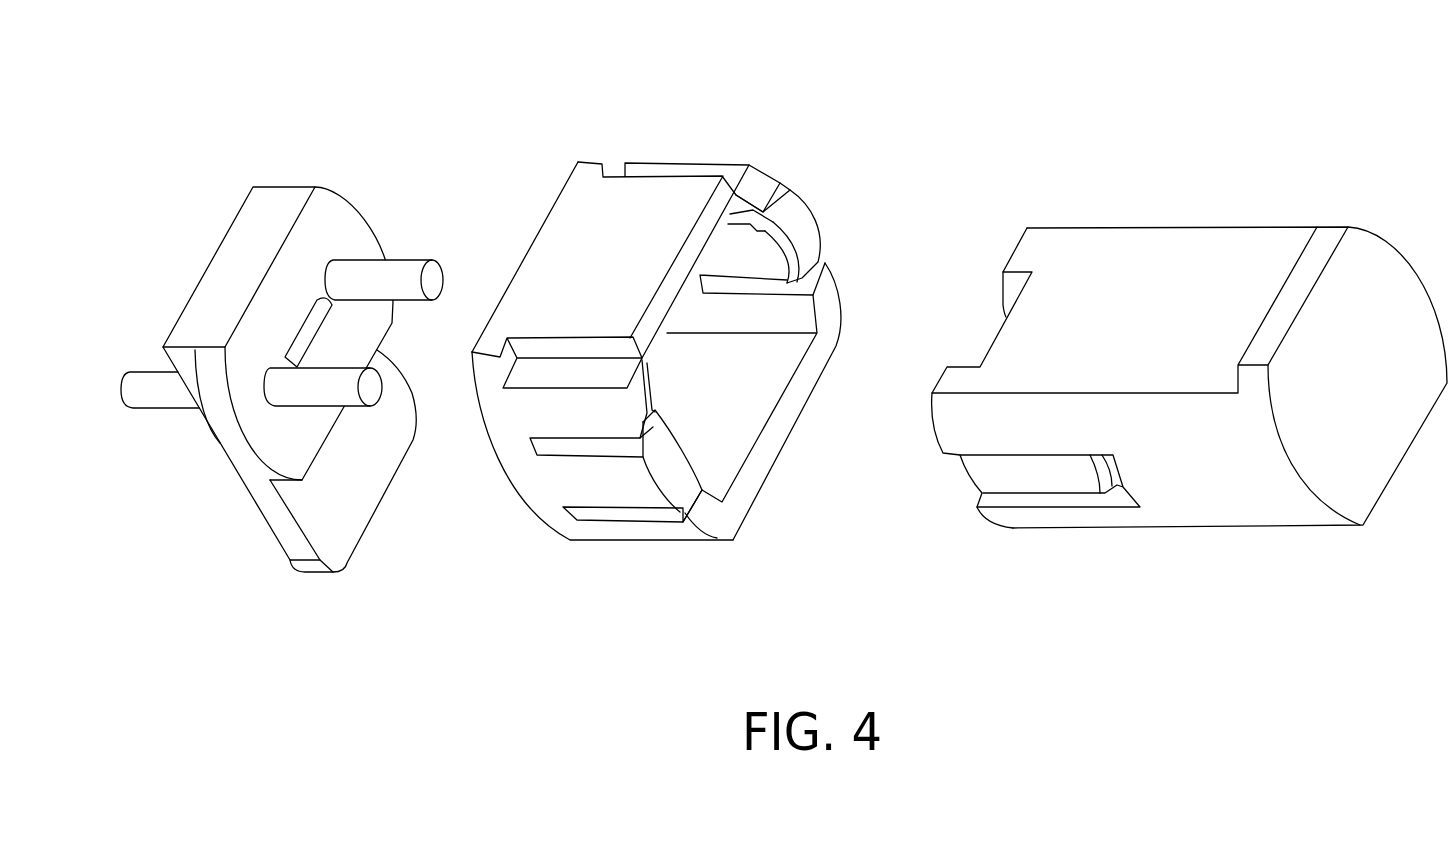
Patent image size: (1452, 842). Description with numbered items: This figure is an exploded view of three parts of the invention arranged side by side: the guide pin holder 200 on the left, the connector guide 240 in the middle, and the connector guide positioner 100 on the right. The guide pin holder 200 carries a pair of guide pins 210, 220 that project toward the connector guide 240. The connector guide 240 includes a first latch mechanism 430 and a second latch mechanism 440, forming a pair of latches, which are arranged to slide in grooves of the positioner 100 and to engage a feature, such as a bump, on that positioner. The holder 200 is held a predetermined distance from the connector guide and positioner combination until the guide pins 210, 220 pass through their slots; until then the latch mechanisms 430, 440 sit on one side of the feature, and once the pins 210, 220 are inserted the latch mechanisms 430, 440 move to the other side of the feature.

The connector guide positioner 100 is at (1179, 200).
The guide pin holder 200 is at (350, 508).
The guide pin 210 is at (323, 368).
The guide pin 220 is at (433, 260).
The connector guide 240 is at (699, 138).
The first latch mechanism 430 is at (805, 205).
The second latch mechanism 440 is at (655, 487).